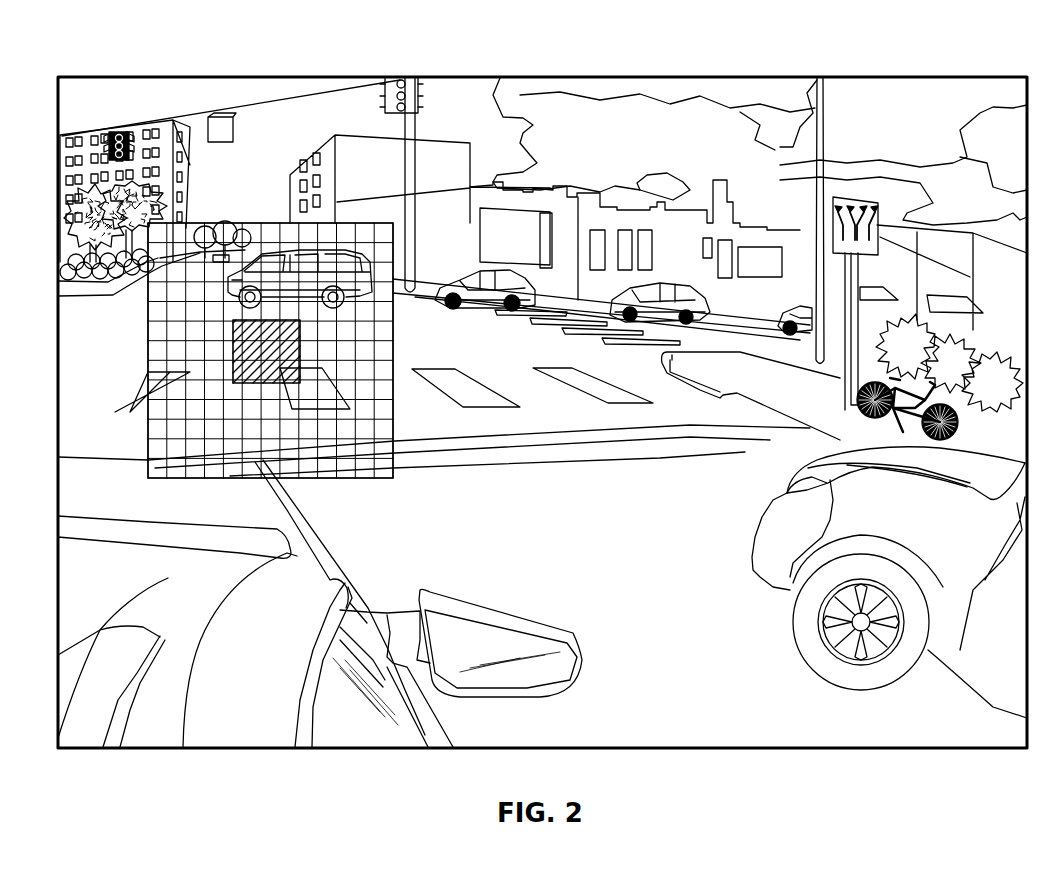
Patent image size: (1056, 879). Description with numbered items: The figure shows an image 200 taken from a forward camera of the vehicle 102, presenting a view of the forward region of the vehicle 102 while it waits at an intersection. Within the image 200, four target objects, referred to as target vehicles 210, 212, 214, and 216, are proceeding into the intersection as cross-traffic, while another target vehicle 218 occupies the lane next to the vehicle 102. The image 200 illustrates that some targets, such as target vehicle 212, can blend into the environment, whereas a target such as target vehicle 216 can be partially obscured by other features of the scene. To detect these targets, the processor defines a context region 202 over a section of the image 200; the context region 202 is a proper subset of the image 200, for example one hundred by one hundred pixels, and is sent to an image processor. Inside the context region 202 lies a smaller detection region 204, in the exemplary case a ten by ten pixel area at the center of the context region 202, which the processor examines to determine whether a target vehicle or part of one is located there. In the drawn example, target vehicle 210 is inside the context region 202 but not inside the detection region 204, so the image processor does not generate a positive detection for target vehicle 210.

The vehicle 102 is at (75, 452).
The image 200 is at (117, 44).
The context region 202 is at (218, 222).
The detection region 204 is at (232, 350).
The target vehicle 210 is at (340, 255).
The target vehicle 212 is at (503, 270).
The target vehicle 214 is at (665, 290).
The target vehicle 216 is at (790, 322).
The target vehicle 218 is at (757, 528).